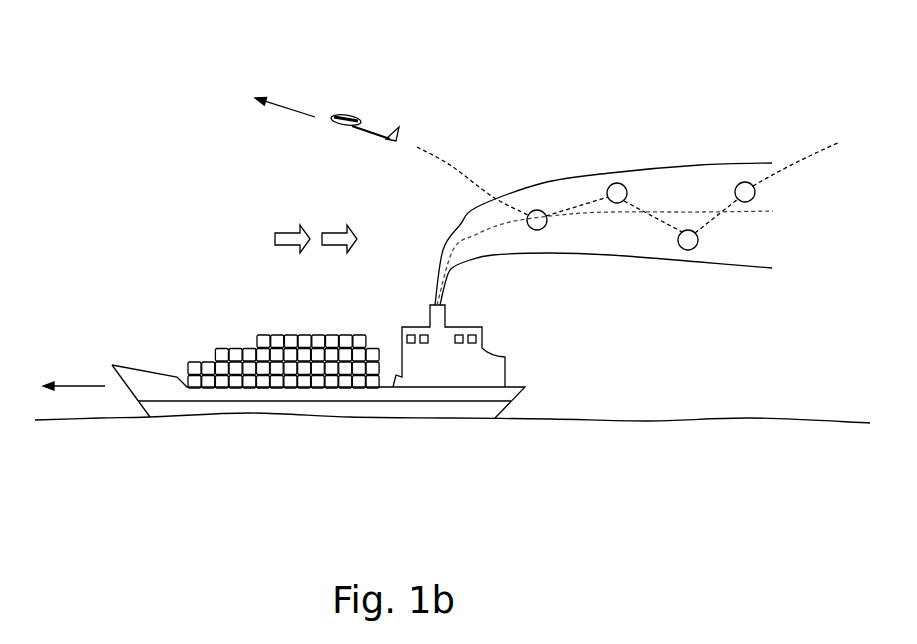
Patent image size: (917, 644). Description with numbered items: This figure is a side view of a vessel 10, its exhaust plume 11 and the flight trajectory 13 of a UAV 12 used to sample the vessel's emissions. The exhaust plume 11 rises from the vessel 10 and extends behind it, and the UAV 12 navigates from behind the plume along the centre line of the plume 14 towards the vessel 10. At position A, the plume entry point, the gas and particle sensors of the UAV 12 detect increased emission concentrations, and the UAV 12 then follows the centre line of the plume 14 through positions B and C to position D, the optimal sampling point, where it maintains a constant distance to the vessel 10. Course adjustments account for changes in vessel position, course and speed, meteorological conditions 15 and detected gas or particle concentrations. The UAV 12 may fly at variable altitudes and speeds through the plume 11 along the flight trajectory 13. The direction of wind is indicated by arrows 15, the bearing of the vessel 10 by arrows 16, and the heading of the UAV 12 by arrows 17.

The vessel 10 is at (220, 334).
The exhaust plume 11 is at (754, 258).
The UAV 12 is at (387, 100).
The flight trajectory 13 is at (809, 146).
The centre line of the plume 14 is at (784, 230).
The meteorological conditions (wind direction arrows) 15 is at (268, 217).
The vessel bearing arrows 16 is at (78, 370).
The UAV heading arrows 17 is at (288, 91).